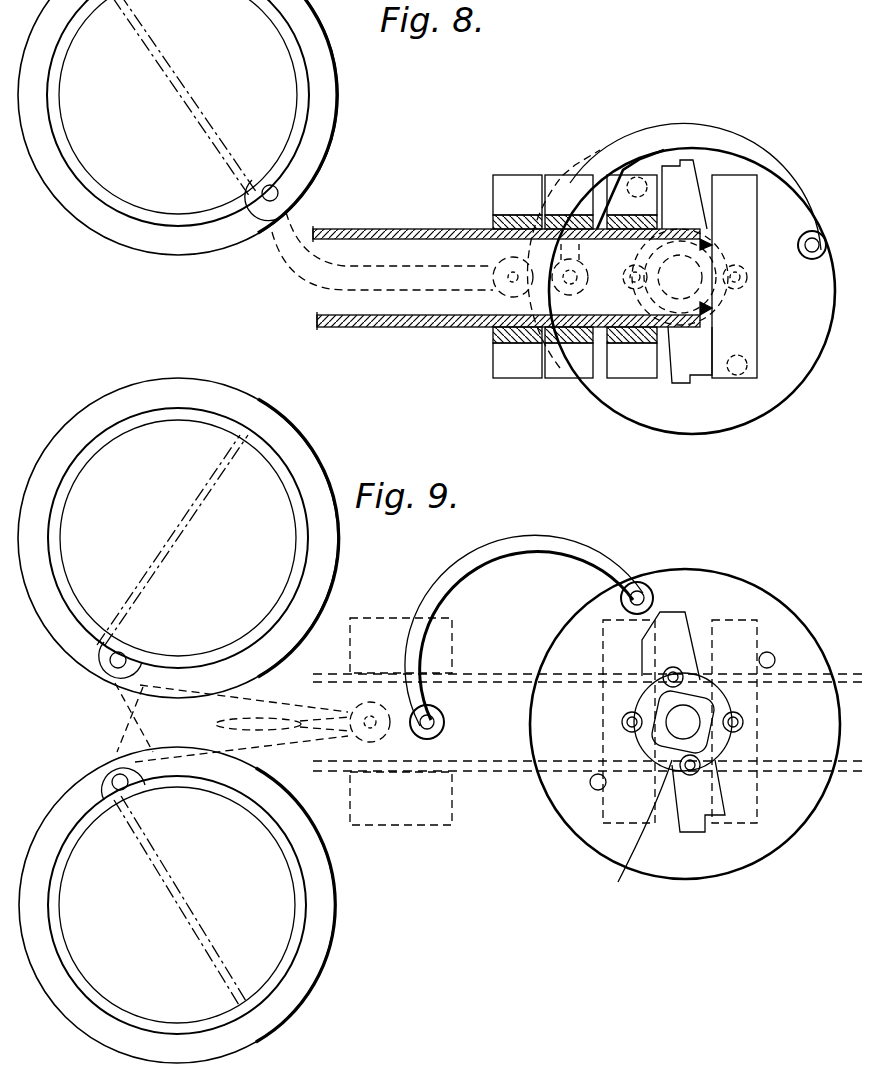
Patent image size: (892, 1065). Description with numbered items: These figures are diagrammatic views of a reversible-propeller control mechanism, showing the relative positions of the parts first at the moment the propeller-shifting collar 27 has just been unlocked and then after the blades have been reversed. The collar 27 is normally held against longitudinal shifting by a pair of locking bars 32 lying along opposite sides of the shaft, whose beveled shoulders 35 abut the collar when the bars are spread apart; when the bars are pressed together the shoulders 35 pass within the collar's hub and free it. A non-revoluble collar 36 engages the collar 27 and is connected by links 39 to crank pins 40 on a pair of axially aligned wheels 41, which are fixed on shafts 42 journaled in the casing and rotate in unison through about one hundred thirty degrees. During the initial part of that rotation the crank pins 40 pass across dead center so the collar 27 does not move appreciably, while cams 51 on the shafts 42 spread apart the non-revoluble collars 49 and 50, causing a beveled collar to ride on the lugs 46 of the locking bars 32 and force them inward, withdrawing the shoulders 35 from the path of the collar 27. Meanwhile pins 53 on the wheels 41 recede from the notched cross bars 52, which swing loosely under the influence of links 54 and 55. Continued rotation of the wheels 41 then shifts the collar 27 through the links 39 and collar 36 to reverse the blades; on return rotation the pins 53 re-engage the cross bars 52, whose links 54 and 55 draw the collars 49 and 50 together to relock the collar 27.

In FIG. 8, the collar 27 is at (510, 196).
In FIG. 8, the locking bars 32 is at (372, 233).
In FIG. 8, the beveled shoulders 35 is at (478, 231).
In FIG. 8, the non-revoluble collar 36 is at (555, 180).
In FIG. 8, the links 39 is at (748, 160).
In FIG. 9, the links 39 is at (565, 548).
In FIG. 8, the crank pins 40 is at (818, 240).
In FIG. 9, the crank pins 40 is at (645, 593).
In FIG. 8, the wheels 41 is at (782, 386).
In FIG. 9, the shafts 42 is at (678, 722).
In FIG. 8, the lugs 46 is at (635, 227).
In FIG. 8, the non-revoluble collar 49 is at (622, 162).
In FIG. 8, the non-revoluble collar 50 is at (738, 220).
In FIG. 9, the cams 51 is at (634, 829).
In FIG. 8, the cross bars 52 is at (688, 175).
In FIG. 9, the cross bars 52 is at (685, 628).
In FIG. 8, the pins 53 is at (640, 176).
In FIG. 9, the pins 53 is at (776, 660).
In FIG. 9, the link 54 is at (665, 680).
In FIG. 9, the link 55 is at (735, 735).